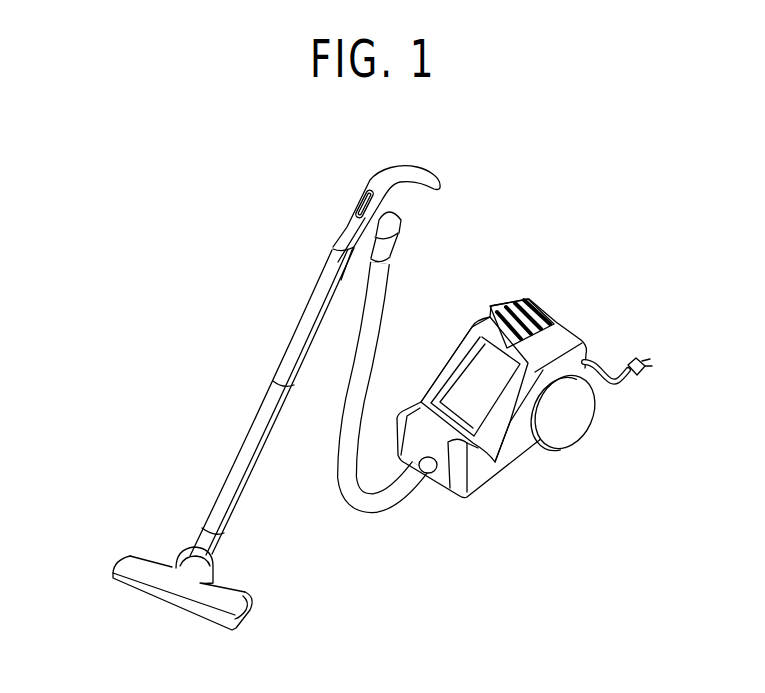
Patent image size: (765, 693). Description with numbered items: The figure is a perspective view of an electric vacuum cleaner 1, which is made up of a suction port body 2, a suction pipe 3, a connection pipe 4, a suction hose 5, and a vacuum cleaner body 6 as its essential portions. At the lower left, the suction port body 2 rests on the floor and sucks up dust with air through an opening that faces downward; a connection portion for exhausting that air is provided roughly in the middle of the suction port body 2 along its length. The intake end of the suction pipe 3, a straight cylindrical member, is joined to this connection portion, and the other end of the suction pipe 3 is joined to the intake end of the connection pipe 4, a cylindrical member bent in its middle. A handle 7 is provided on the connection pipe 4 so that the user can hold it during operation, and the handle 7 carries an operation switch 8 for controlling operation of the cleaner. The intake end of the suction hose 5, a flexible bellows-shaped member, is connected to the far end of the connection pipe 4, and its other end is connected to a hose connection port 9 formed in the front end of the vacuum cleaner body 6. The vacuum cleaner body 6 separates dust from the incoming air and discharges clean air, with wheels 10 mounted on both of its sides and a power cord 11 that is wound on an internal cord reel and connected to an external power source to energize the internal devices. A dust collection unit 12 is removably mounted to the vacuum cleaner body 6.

The electric vacuum cleaner 1 is at (262, 231).
The suction port body 2 is at (146, 556).
The suction pipe 3 is at (302, 332).
The connection pipe 4 is at (386, 211).
The suction hose 5 is at (378, 322).
The vacuum cleaner body 6 is at (556, 346).
The handle 7 is at (419, 166).
The operation switch 8 is at (360, 200).
The hose connection port 9 is at (428, 476).
The wheels 10 is at (572, 432).
The power cord 11 is at (607, 360).
The dust collection unit 12 is at (478, 405).